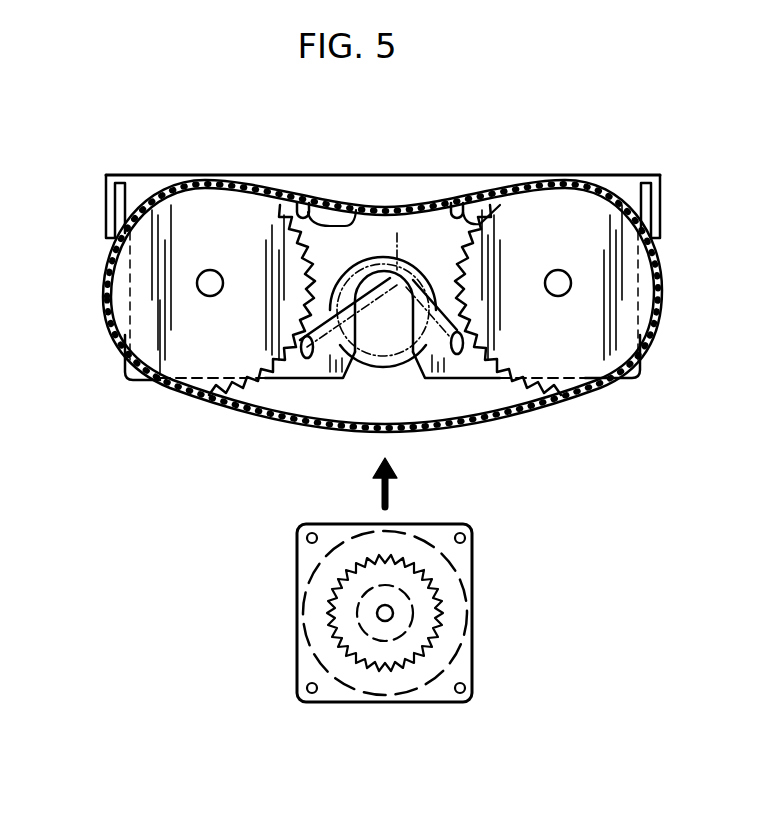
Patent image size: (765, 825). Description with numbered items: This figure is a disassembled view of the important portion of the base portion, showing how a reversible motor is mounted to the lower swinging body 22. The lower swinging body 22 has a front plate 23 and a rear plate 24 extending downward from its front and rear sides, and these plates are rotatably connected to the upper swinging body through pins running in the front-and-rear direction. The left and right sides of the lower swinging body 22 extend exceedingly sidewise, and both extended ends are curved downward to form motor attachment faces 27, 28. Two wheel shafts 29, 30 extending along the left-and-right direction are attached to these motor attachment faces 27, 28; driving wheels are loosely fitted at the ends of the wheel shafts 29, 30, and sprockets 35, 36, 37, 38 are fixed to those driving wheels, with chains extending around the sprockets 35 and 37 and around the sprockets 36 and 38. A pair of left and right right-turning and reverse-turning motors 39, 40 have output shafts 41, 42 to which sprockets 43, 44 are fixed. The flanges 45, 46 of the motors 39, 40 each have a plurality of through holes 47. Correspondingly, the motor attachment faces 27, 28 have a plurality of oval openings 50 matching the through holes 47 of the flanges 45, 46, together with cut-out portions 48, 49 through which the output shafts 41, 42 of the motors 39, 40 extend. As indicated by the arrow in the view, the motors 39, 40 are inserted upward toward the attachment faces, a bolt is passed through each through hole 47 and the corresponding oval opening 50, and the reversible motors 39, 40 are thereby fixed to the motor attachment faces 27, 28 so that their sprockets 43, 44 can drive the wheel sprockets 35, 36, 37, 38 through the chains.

The lower swinging body 22 is at (162, 170).
The front plate 23 is at (107, 210).
The rear plate 24 is at (662, 200).
The motor attachment face 27 is at (382, 256).
The motor attachment face 28 is at (412, 190).
The wheel shaft 29 is at (210, 268).
The wheel shaft 30 is at (558, 268).
The sprocket 35 is at (249, 240).
The sprocket 36 is at (234, 217).
The sprocket 37 is at (538, 246).
The sprocket 38 is at (535, 215).
The reversible motor 39 is at (385, 655).
The reversible motor 40 is at (383, 683).
The output shaft 41 is at (509, 605).
The output shaft 42 is at (397, 612).
The sprocket 43 is at (318, 613).
The sprocket 44 is at (335, 625).
The flange 45 is at (469, 610).
The flange 46 is at (463, 563).
The through hole 47 is at (297, 532).
The cut-out portion 48 is at (433, 358).
The cut-out portion 49 is at (397, 370).
The oval opening 50 is at (340, 215).